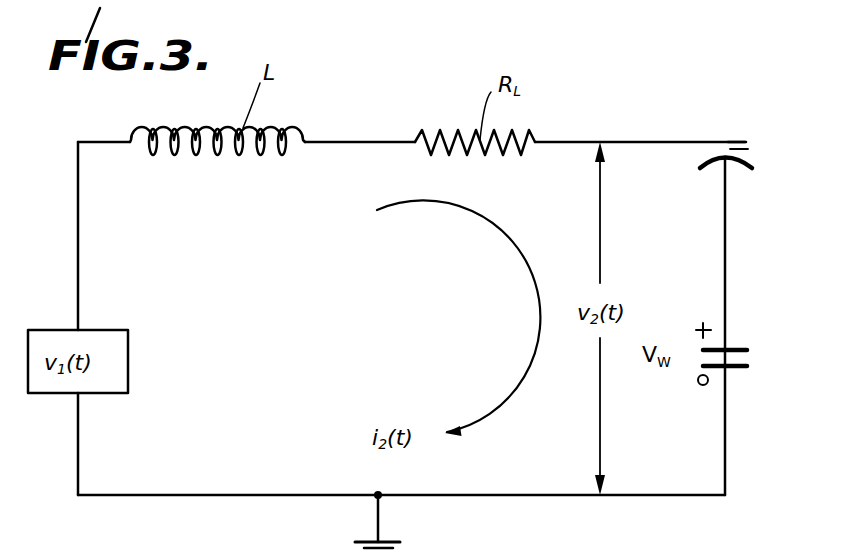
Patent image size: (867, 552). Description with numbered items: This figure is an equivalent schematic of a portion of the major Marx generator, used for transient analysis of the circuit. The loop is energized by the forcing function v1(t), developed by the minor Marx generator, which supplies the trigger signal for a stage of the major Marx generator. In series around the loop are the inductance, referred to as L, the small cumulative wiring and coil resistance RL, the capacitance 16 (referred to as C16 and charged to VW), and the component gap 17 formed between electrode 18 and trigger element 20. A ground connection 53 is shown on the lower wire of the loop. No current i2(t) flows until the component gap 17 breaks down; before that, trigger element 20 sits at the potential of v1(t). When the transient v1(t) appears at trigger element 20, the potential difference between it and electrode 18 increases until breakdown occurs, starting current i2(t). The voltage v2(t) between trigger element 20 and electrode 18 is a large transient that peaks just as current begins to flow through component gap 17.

The capacitance 16 is at (748, 360).
The component gap 17 is at (748, 150).
The electrode 18 is at (740, 166).
The trigger element 20 is at (738, 142).
The ground connection 53 is at (396, 540).